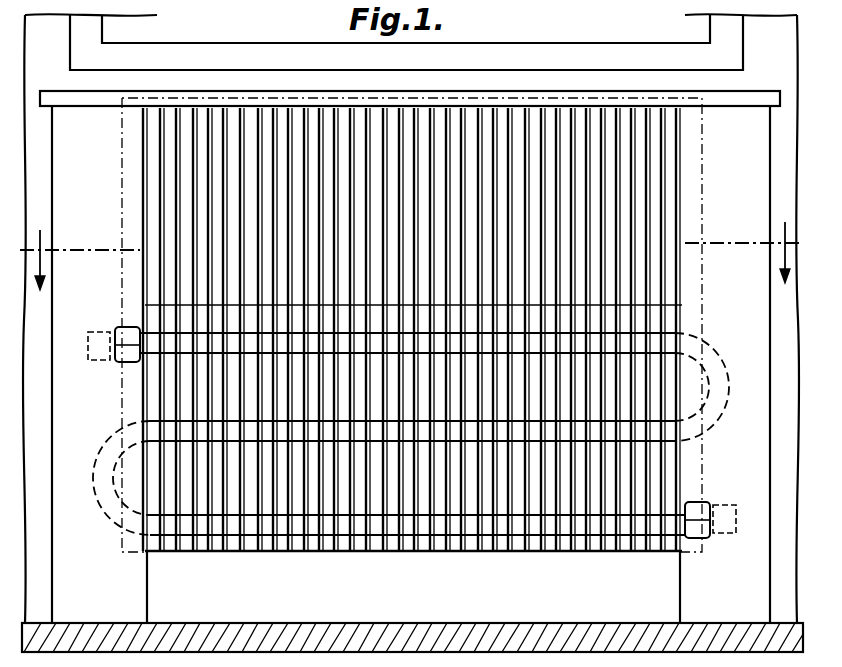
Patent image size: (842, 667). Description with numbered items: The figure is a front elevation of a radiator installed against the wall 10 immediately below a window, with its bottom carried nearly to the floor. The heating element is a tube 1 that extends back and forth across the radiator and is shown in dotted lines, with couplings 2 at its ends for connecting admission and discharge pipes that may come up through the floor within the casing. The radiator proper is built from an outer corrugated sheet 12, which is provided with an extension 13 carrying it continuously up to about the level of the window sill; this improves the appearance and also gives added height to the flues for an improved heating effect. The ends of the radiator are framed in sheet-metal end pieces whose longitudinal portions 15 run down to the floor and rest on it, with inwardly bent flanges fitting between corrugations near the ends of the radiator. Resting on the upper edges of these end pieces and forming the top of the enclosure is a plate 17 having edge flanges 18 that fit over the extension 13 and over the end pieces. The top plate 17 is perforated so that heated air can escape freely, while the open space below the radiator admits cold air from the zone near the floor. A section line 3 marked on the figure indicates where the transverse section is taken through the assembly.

The tube 1 is at (157, 353).
The couplings 2 is at (94, 332).
The section line III-III 3 is at (411, 242).
The wall 10 is at (416, 333).
The outer corrugated sheet 12 is at (650, 478).
The extension 13 is at (660, 223).
The longitudinal portions 15 is at (434, 325).
The plate 17 is at (222, 91).
The edge flanges 18 is at (98, 106).